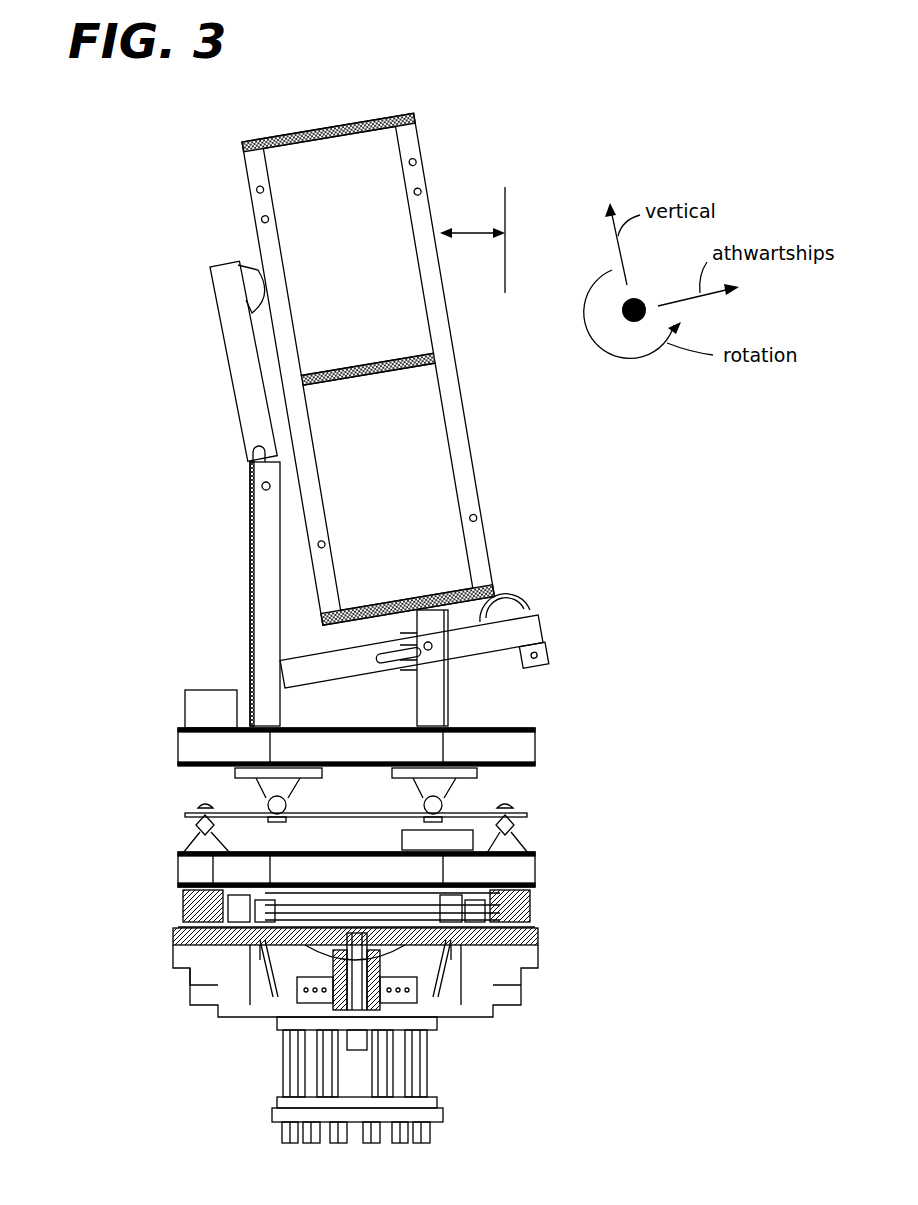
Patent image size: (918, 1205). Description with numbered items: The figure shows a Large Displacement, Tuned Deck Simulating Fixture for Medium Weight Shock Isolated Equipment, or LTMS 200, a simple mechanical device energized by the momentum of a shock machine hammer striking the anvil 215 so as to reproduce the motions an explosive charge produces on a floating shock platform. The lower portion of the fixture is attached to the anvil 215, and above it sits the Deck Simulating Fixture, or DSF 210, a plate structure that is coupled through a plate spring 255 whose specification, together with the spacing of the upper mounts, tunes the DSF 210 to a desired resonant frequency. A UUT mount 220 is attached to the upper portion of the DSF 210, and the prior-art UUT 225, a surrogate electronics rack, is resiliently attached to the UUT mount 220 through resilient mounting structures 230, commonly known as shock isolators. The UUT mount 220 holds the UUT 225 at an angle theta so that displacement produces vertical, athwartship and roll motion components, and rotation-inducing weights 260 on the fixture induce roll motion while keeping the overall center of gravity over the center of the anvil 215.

The Large Displacement, Tuned Deck Simulating Fixture for Medium Weight Shock Isolat 200 is at (574, 96).
The Deck Simulating Fixture (DSF) 210 is at (545, 725).
The anvil 215 is at (167, 930).
The UUT mount 220 is at (252, 516).
The UUT 225 is at (453, 407).
The resilient mounting structures 230 is at (267, 278).
The plate spring 255 is at (470, 812).
The rotation-inducing weights 260 is at (197, 688).